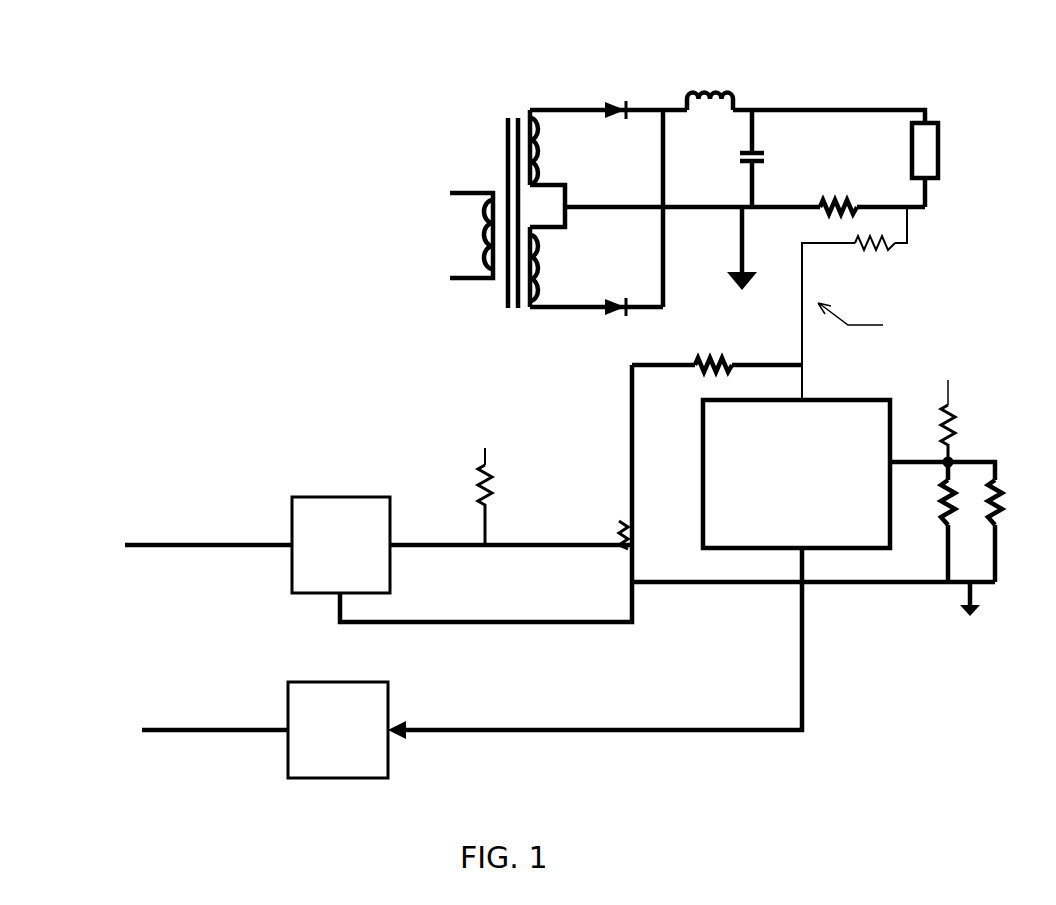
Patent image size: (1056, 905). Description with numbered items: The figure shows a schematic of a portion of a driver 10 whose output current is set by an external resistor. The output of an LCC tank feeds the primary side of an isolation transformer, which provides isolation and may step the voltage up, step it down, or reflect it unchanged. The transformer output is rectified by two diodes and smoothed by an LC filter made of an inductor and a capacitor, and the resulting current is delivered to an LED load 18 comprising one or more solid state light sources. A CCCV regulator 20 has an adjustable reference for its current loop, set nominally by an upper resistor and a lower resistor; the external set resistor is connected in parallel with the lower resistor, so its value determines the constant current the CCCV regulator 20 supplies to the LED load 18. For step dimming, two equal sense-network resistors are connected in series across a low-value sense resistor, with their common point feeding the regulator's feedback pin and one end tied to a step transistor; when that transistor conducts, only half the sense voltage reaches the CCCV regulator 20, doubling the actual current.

The driver 10 is at (225, 82).
The LED load 18 is at (963, 150).
The CCCV regulator 20 is at (780, 474).